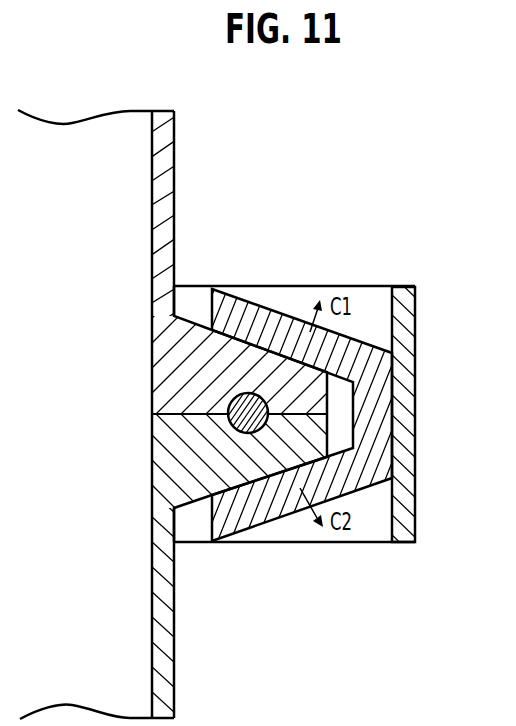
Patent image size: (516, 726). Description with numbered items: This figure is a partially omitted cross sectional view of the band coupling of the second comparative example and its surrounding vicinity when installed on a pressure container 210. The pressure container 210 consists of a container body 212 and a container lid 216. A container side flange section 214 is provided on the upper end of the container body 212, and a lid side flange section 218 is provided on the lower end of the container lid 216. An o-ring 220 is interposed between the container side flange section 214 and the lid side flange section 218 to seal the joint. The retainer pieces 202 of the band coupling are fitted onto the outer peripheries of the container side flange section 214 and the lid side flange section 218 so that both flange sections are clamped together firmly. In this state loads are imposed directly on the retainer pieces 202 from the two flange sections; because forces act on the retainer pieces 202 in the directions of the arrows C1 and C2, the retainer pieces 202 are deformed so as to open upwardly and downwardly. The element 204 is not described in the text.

The pressure container 210 is at (143, 409).
The container lid 216 is at (168, 235).
The container body 212 is at (165, 647).
The retainer pieces 202 is at (363, 352).
The cover wall 204 is at (405, 362).
The lid side flange section 218 is at (250, 370).
The container side flange section 214 is at (253, 457).
The o-ring 220 is at (229, 405).